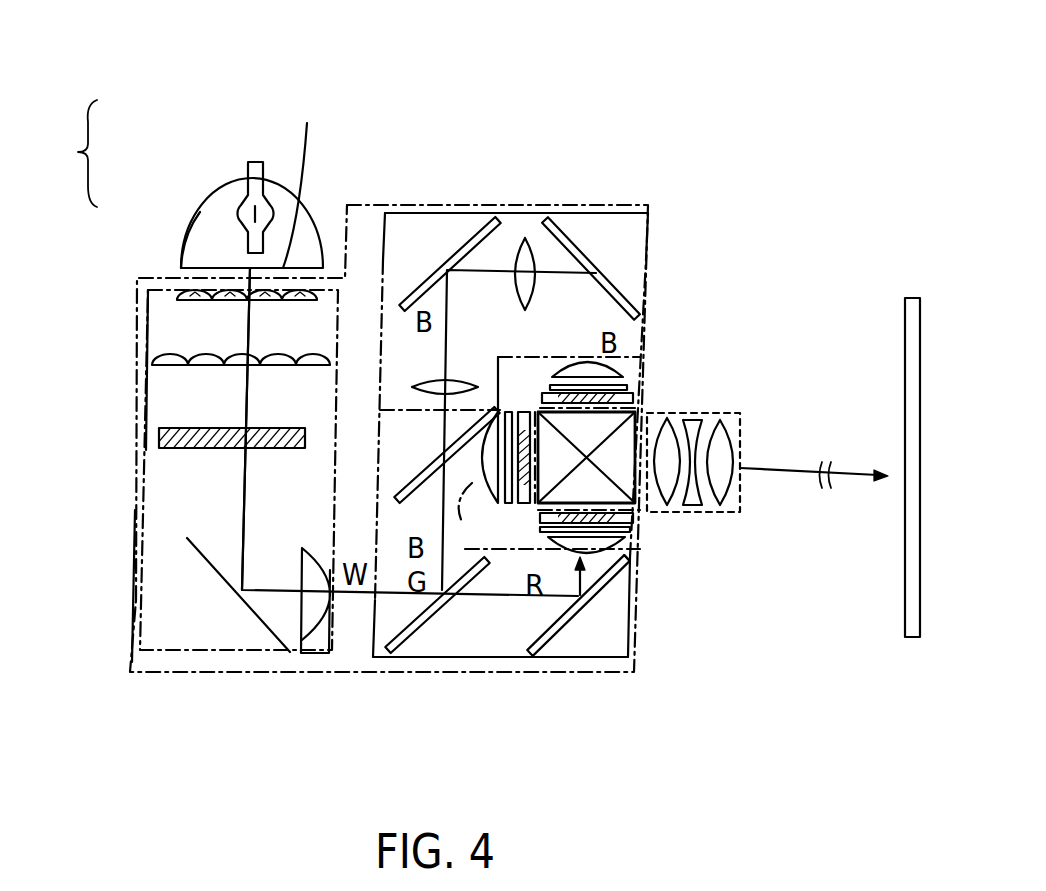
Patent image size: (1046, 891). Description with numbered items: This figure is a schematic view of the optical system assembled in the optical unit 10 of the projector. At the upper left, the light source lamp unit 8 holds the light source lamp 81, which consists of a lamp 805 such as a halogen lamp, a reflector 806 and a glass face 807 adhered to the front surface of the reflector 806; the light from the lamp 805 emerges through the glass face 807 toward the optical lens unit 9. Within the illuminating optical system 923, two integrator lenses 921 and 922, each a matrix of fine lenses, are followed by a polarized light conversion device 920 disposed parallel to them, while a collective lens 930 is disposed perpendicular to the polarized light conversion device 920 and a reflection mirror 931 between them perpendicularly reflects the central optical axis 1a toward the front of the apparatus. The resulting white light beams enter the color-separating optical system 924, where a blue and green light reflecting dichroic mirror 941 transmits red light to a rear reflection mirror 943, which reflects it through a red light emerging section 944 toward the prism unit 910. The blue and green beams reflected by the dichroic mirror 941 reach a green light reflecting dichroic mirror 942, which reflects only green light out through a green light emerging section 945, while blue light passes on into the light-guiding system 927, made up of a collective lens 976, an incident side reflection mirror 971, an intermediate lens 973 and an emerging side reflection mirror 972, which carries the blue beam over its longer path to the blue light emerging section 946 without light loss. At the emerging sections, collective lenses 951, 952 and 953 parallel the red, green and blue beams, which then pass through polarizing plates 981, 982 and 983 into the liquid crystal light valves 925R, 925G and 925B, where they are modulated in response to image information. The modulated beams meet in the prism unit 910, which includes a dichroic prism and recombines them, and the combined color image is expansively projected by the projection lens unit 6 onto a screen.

The light source lamp unit 8 is at (197, 177).
The light source lamp 81 is at (213, 197).
The lamp 805 is at (240, 190).
The reflector 806 is at (188, 233).
The glass face 807 is at (311, 177).
The optical lens unit 9 is at (132, 598).
The optical unit 10 is at (748, 150).
The central optical axis 1a is at (242, 482).
The integrator lens 921 is at (160, 295).
The integrator lens 922 is at (152, 360).
The polarized light conversion device 920 is at (159, 438).
The illuminating optical system 923 is at (137, 512).
The reflection mirror 931 is at (263, 623).
The collective lens 930 is at (298, 653).
The light-guiding system 927 is at (652, 216).
The incident side reflection mirror 971 is at (422, 213).
The emerging side reflection mirror 972 is at (612, 262).
The intermediate lens 973 is at (540, 212).
The blue light emerging section 946 is at (588, 357).
The collective lens 953 is at (627, 370).
The polarizing plate 983 is at (628, 388).
The liquid crystal light valve 925B is at (633, 398).
The prism unit 910 is at (640, 420).
The collective lens 952 is at (495, 413).
The polarizing plate 982 is at (510, 413).
The liquid crystal light valve 925G is at (522, 413).
The liquid crystal light valve 925R is at (635, 522).
The polarizing plate 981 is at (632, 532).
The collective lens 951 is at (625, 550).
The collective lens 976 is at (395, 410).
The green light reflecting dichroic mirror 942 is at (400, 492).
The green light emerging section 945 is at (549, 516).
The blue and green light reflecting dichroic mirror 941 is at (417, 637).
The color-separating optical system 924 is at (503, 633).
The reflection mirror 943 is at (555, 640).
The red light emerging section 944 is at (632, 572).
The projection lens unit 6 is at (748, 428).